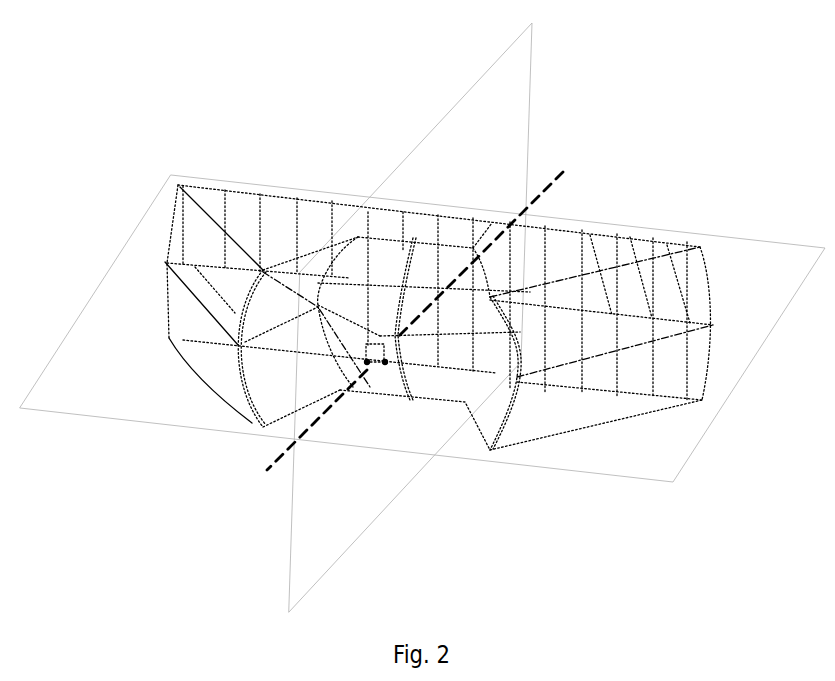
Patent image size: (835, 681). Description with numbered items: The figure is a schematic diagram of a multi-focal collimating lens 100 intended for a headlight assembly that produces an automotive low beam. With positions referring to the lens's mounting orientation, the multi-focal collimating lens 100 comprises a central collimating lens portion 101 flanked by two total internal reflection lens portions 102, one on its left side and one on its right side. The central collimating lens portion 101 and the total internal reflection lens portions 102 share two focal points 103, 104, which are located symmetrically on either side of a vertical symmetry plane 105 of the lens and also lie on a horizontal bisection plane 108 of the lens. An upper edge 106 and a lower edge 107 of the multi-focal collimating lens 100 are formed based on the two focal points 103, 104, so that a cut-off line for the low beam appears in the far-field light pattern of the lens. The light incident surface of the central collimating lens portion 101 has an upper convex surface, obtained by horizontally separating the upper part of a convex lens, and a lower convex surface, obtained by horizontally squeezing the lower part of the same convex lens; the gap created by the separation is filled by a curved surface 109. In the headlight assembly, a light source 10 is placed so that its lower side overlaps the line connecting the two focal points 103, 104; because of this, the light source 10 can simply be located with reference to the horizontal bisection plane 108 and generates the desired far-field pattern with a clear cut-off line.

The multi-focal collimating lens 100 is at (129, 134).
The central collimating lens portion 101 is at (383, 267).
The total internal reflection lens portions 102 is at (185, 318).
The focal point 103 is at (368, 363).
The light source 10 is at (382, 363).
The focal point 104 is at (387, 362).
The vertical symmetry plane 105 is at (293, 487).
The upper edge 106 is at (200, 212).
The lower edge 107 is at (445, 402).
The horizontal bisection plane 108 is at (670, 443).
The curved surface 109 is at (394, 333).